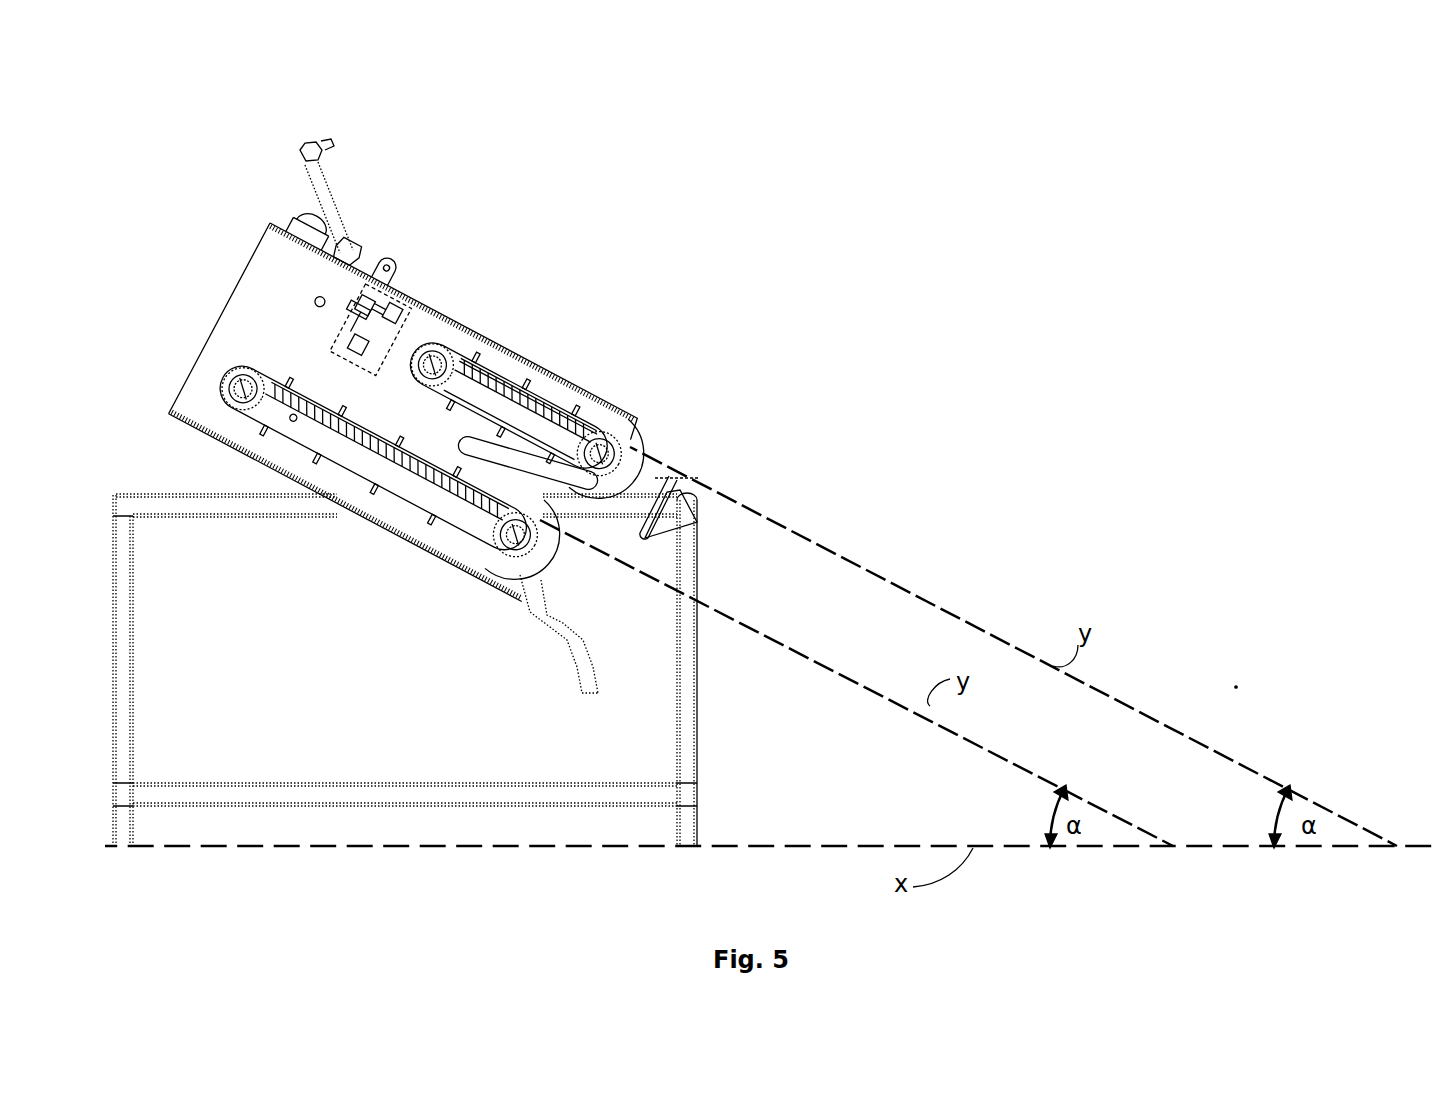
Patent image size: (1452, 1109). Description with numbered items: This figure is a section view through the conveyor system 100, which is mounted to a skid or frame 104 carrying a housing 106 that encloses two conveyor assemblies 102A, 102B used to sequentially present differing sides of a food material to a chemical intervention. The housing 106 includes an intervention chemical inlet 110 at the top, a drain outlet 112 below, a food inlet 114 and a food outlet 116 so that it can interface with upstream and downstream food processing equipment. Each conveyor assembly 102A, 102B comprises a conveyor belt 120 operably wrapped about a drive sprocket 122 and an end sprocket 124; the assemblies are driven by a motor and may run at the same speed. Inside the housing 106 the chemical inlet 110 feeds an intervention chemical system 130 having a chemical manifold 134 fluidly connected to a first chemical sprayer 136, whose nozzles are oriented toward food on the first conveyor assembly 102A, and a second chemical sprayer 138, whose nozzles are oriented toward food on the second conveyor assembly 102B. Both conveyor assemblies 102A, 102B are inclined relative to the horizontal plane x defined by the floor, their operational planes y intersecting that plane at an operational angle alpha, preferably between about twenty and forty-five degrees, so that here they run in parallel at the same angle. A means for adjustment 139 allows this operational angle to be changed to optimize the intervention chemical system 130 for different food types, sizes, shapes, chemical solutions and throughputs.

The conveyor system 100 is at (230, 127).
The first conveyor assembly 102A is at (593, 445).
The second conveyor assembly 102B is at (340, 467).
The frame 104 is at (125, 757).
The housing 106 is at (212, 345).
The intervention chemical inlet 110 is at (328, 141).
The drain outlet 112 is at (590, 697).
The food inlet 114 is at (589, 432).
The food outlet 116 is at (248, 453).
The conveyor belt 120 is at (543, 407).
The drive sprocket 122 is at (436, 362).
The end sprocket 124 is at (608, 452).
The intervention chemical system 130 is at (367, 303).
The chemical manifold 134 is at (363, 307).
The first chemical sprayer 136 is at (394, 313).
The second chemical sprayer 138 is at (358, 346).
The means for adjustment 139 is at (700, 490).